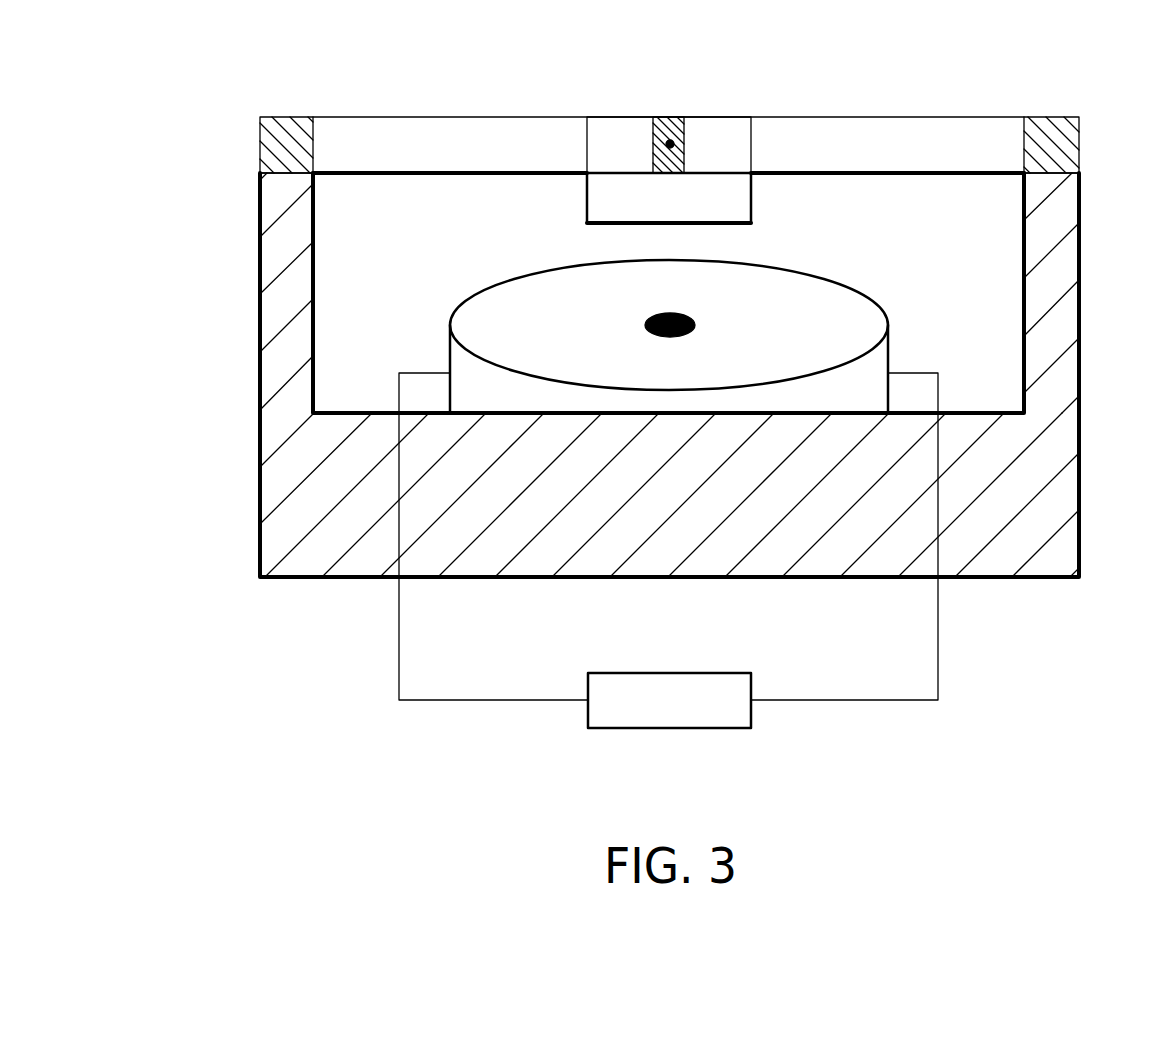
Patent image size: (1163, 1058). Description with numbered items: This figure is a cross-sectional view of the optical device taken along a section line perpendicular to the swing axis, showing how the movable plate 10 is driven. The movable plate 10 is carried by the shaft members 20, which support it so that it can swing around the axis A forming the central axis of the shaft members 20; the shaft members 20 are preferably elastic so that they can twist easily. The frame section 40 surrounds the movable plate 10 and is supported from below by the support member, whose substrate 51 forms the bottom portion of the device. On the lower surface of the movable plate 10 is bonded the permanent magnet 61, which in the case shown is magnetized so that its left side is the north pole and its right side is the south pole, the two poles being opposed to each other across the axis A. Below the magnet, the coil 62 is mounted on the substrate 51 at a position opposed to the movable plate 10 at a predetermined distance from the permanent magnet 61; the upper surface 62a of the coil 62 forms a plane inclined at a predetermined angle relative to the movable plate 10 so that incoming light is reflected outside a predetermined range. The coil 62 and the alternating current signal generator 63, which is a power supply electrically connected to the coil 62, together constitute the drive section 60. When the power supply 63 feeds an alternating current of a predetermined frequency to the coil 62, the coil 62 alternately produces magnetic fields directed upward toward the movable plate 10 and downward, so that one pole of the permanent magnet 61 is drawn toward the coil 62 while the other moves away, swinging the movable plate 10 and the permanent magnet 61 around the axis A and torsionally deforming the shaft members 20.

The movable plate 10 is at (624, 135).
The shaft member 20 is at (665, 123).
The axis A is at (675, 144).
The frame section 40 is at (280, 125).
The substrate 51 is at (270, 488).
The permanent magnet 61 is at (709, 207).
The coil 62 is at (783, 468).
The upper surface of the coil 62a is at (818, 295).
The alternating current signal generator 63 is at (752, 712).
The drive section 60 is at (1131, 692).